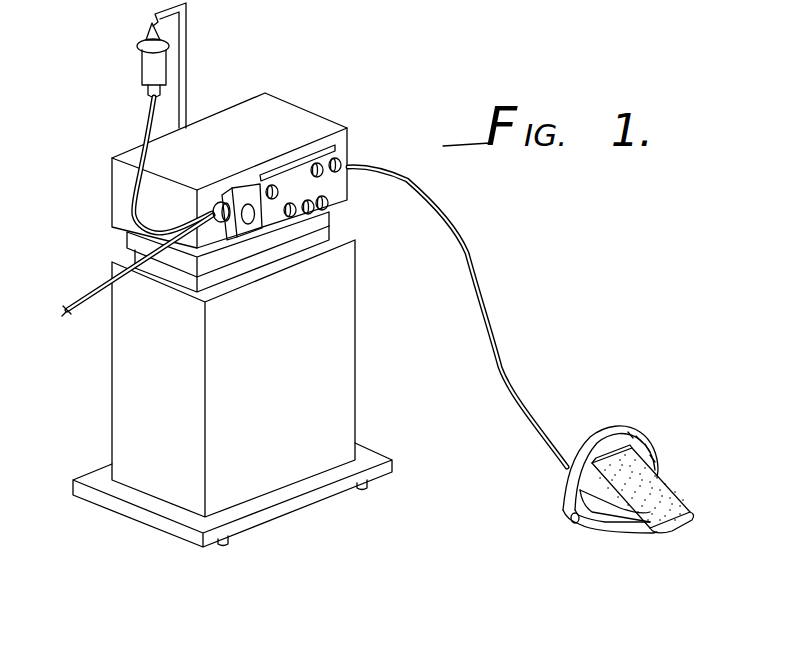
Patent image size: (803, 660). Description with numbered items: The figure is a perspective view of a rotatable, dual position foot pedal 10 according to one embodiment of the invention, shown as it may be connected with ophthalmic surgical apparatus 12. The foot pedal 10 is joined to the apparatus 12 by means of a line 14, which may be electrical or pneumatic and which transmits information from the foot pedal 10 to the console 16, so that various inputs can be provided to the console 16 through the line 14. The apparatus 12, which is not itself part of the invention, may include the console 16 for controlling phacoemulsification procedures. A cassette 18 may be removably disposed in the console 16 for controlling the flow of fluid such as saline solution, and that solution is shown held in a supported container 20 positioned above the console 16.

The dual position foot pedal 10 is at (688, 452).
The ophthalmic surgical apparatus 12 is at (368, 151).
The line 14 is at (489, 326).
The console 16 is at (307, 118).
The cassette 18 is at (237, 190).
The supported container 20 is at (142, 77).